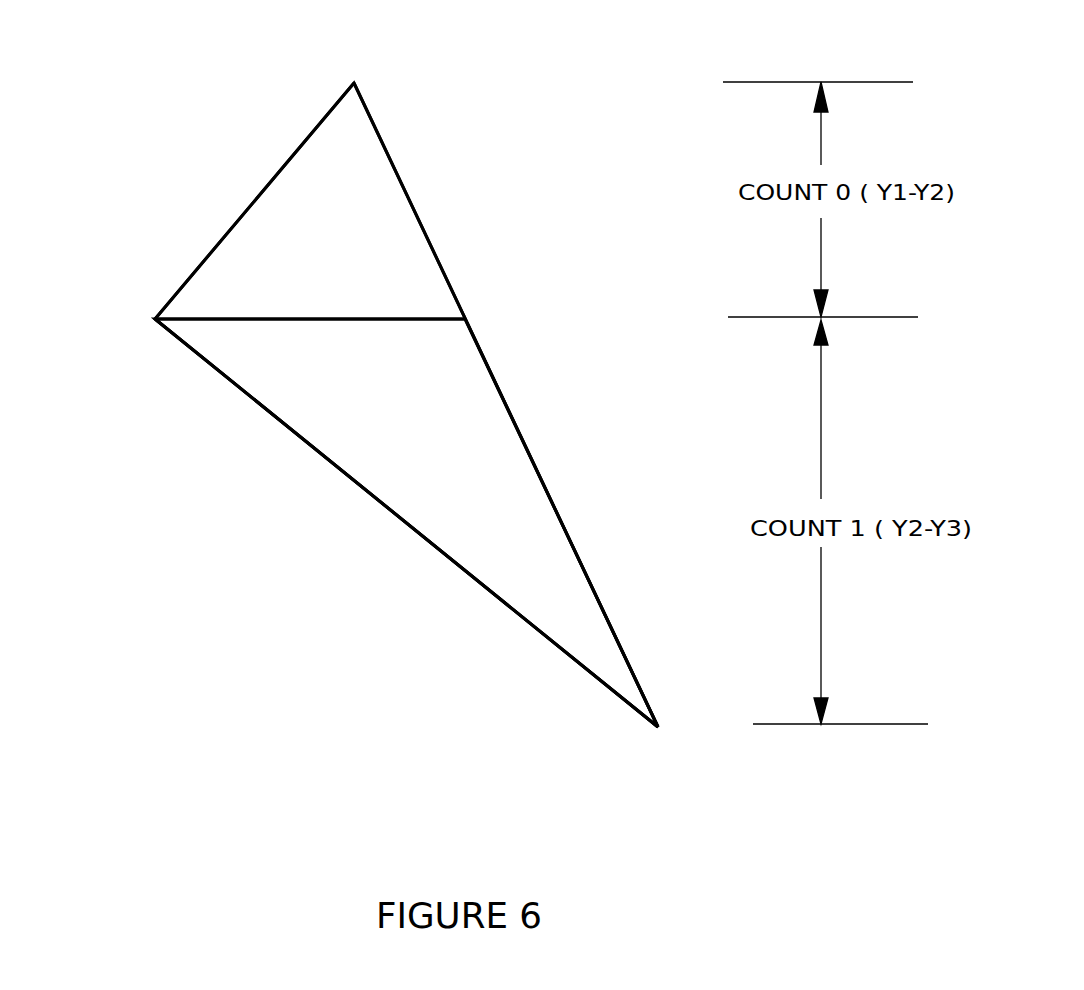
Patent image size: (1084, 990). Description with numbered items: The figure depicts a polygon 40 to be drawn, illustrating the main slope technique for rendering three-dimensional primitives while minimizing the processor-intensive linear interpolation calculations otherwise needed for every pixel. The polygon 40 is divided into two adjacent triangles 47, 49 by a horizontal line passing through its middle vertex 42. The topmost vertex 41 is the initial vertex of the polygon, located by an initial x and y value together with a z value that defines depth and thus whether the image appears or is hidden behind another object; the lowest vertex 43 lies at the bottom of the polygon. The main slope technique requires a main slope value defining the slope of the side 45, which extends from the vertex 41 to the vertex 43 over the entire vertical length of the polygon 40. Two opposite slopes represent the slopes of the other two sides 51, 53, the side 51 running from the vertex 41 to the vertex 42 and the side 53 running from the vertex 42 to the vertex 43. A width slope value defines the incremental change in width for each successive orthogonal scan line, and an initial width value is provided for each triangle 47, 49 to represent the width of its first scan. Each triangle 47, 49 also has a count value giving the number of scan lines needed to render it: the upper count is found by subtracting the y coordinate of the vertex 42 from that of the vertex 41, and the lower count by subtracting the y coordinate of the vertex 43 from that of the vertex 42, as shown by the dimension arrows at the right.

The polygon 40 is at (465, 568).
The first vertex (R1,Y1) 41 is at (352, 82).
The second vertex (X2,Y2) 42 is at (152, 322).
The third vertex (R3,Y3) 43 is at (662, 728).
The side 45 is at (504, 397).
The triangle 47 is at (372, 225).
The triangle 49 is at (485, 480).
The side 51 is at (226, 235).
The side 53 is at (312, 447).